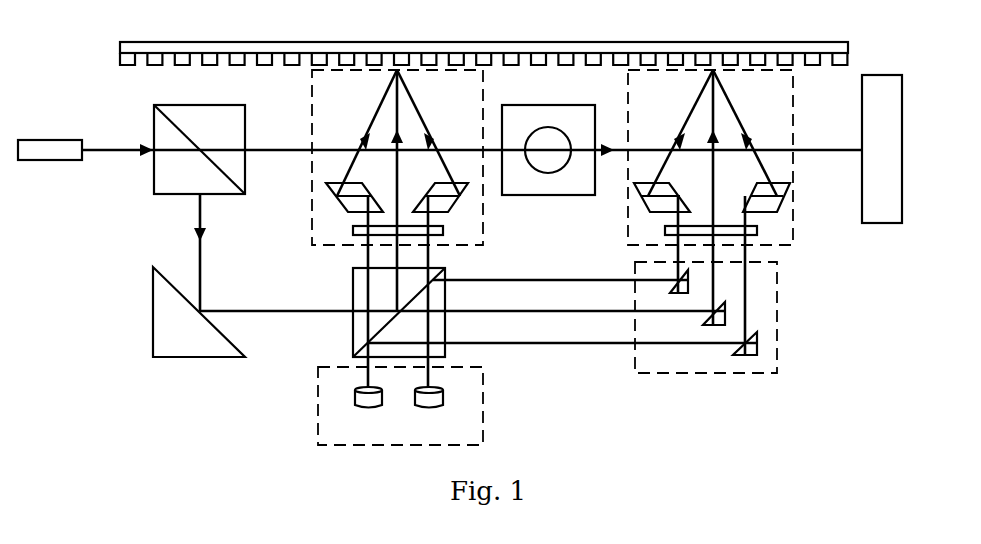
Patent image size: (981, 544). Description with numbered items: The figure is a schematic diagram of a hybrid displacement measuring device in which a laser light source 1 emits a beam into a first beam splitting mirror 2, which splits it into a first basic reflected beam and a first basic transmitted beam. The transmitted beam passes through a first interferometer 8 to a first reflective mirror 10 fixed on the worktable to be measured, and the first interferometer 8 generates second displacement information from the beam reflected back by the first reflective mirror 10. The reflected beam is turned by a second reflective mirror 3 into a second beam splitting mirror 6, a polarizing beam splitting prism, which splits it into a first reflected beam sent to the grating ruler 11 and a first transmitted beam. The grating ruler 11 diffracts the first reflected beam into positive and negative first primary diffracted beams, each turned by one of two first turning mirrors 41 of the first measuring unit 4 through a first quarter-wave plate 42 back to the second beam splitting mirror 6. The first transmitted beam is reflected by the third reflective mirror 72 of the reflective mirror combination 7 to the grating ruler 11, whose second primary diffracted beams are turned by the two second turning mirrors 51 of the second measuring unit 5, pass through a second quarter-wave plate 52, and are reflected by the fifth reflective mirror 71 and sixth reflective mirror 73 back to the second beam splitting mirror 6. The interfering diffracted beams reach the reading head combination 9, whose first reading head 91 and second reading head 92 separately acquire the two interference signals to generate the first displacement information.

The laser light source 1 is at (72, 162).
The first beam splitting mirror 2 is at (248, 132).
The second reflective mirror 3 is at (153, 307).
The first measuring unit 4 is at (312, 204).
The first turning mirror 41 is at (366, 197).
The first quarter-wave plate 42 is at (443, 232).
The second measuring unit 5 is at (628, 215).
The second turning mirror 51 is at (676, 196).
The second quarter-wave plate 52 is at (757, 232).
The second beam splitting mirror 6 is at (353, 292).
The reflective mirror combination 7 is at (777, 312).
The fifth reflective mirror 71 is at (682, 292).
The third reflective mirror 72 is at (712, 322).
The sixth reflective mirror 73 is at (744, 353).
The first interferometer 8 is at (560, 197).
The reading head combination 9 is at (483, 400).
The first reading head 91 is at (354, 404).
The second reading head 92 is at (444, 404).
The first reflective mirror 10 is at (903, 176).
The grating ruler 11 is at (848, 48).